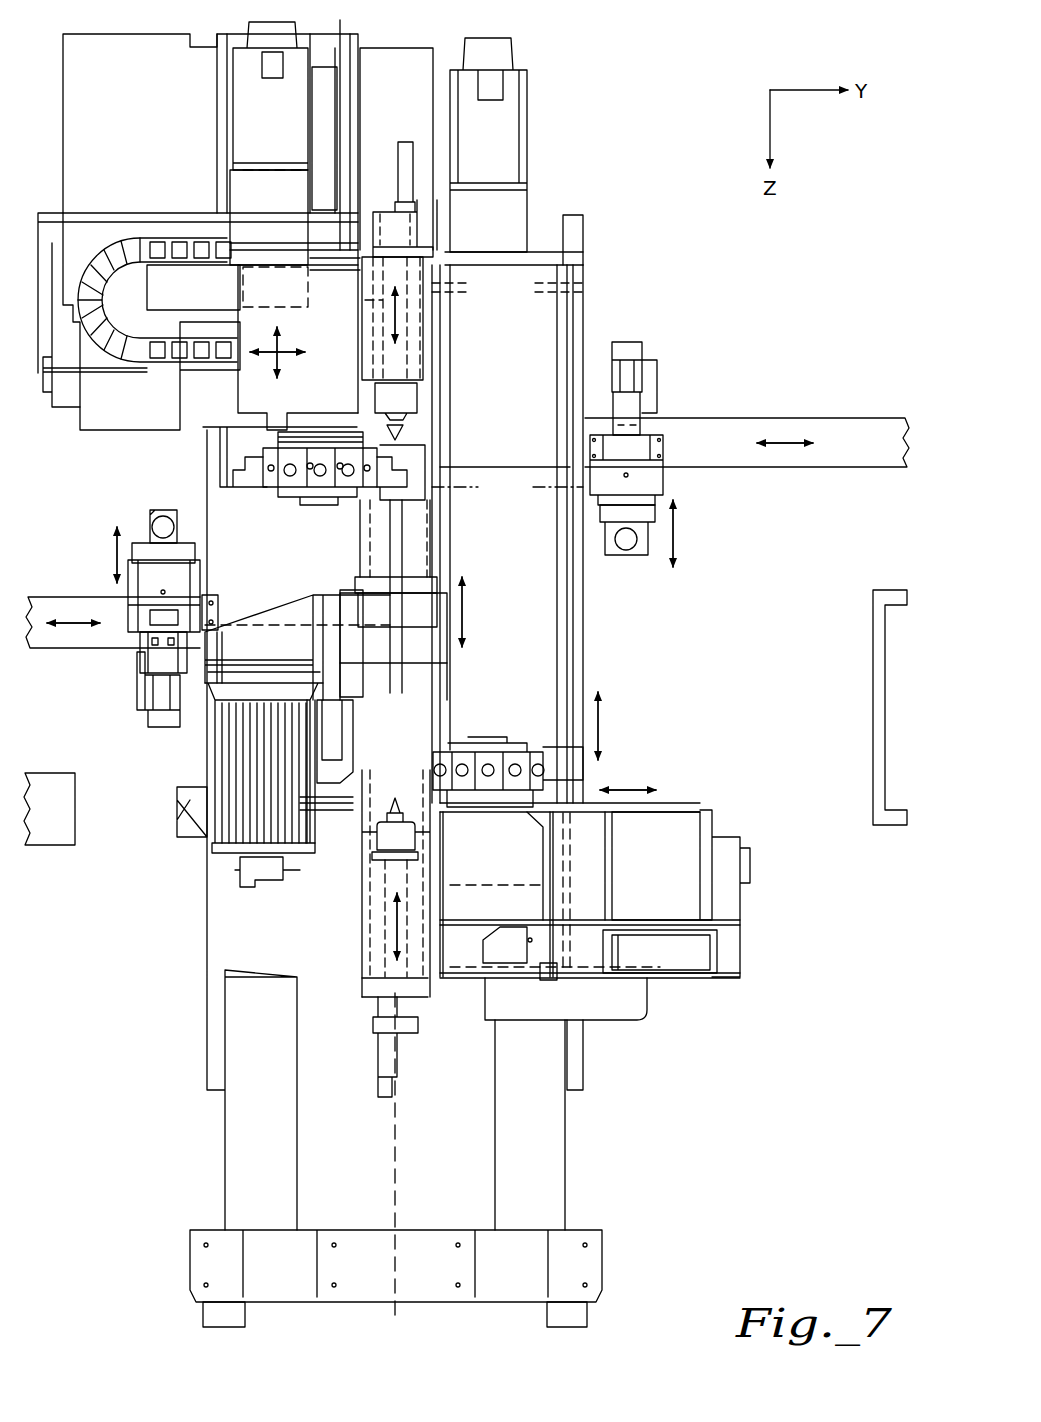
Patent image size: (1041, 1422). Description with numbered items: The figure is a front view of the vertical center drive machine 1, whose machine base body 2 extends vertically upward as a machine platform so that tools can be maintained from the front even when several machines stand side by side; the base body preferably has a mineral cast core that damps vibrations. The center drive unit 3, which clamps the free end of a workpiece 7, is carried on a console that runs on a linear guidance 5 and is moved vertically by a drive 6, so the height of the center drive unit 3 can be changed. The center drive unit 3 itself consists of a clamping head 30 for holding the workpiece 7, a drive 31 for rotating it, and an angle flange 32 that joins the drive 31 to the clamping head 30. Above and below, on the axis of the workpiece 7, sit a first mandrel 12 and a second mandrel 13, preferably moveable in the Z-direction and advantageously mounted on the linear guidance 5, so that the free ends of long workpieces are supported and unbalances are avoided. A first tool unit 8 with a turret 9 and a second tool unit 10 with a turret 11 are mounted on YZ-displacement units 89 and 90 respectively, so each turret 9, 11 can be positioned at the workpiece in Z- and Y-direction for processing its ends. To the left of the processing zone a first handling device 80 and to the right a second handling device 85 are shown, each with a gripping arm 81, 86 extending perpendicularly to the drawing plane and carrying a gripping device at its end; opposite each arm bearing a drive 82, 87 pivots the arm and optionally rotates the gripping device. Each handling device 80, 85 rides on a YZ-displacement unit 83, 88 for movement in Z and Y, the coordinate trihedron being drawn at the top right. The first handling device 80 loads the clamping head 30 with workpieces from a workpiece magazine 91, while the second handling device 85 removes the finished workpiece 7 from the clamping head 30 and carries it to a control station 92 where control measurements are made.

The center drive machine 1 is at (134, 1167).
The machine base body 2 is at (463, 1182).
The center drive unit 3 is at (530, 661).
The linear guidance 5 is at (395, 776).
The drive 6 is at (512, 115).
The workpiece 7 is at (400, 545).
The first tool unit 8 is at (662, 990).
The turret 9 is at (545, 763).
The second tool unit 10 is at (166, 443).
The turret 11 is at (240, 455).
The first mandrel 12 is at (400, 272).
The second mandrel 13 is at (397, 968).
The clamping head 30 is at (425, 640).
The drive 31 is at (250, 817).
The angle flange 32 is at (250, 658).
The first handling device 80 is at (152, 590).
The gripping arm 81 is at (150, 525).
The drive 82 is at (152, 698).
The YZ-displacement unit 83 is at (40, 650).
The second handling device 85 is at (650, 478).
The gripping arm 86 is at (633, 556).
The drive 87 is at (640, 368).
The YZ-displacement unit 88 is at (702, 418).
The YZ-displacement unit 89 is at (262, 378).
The YZ-displacement unit 90 is at (600, 885).
The workpiece magazine 91 is at (40, 848).
The control station 92 is at (872, 810).